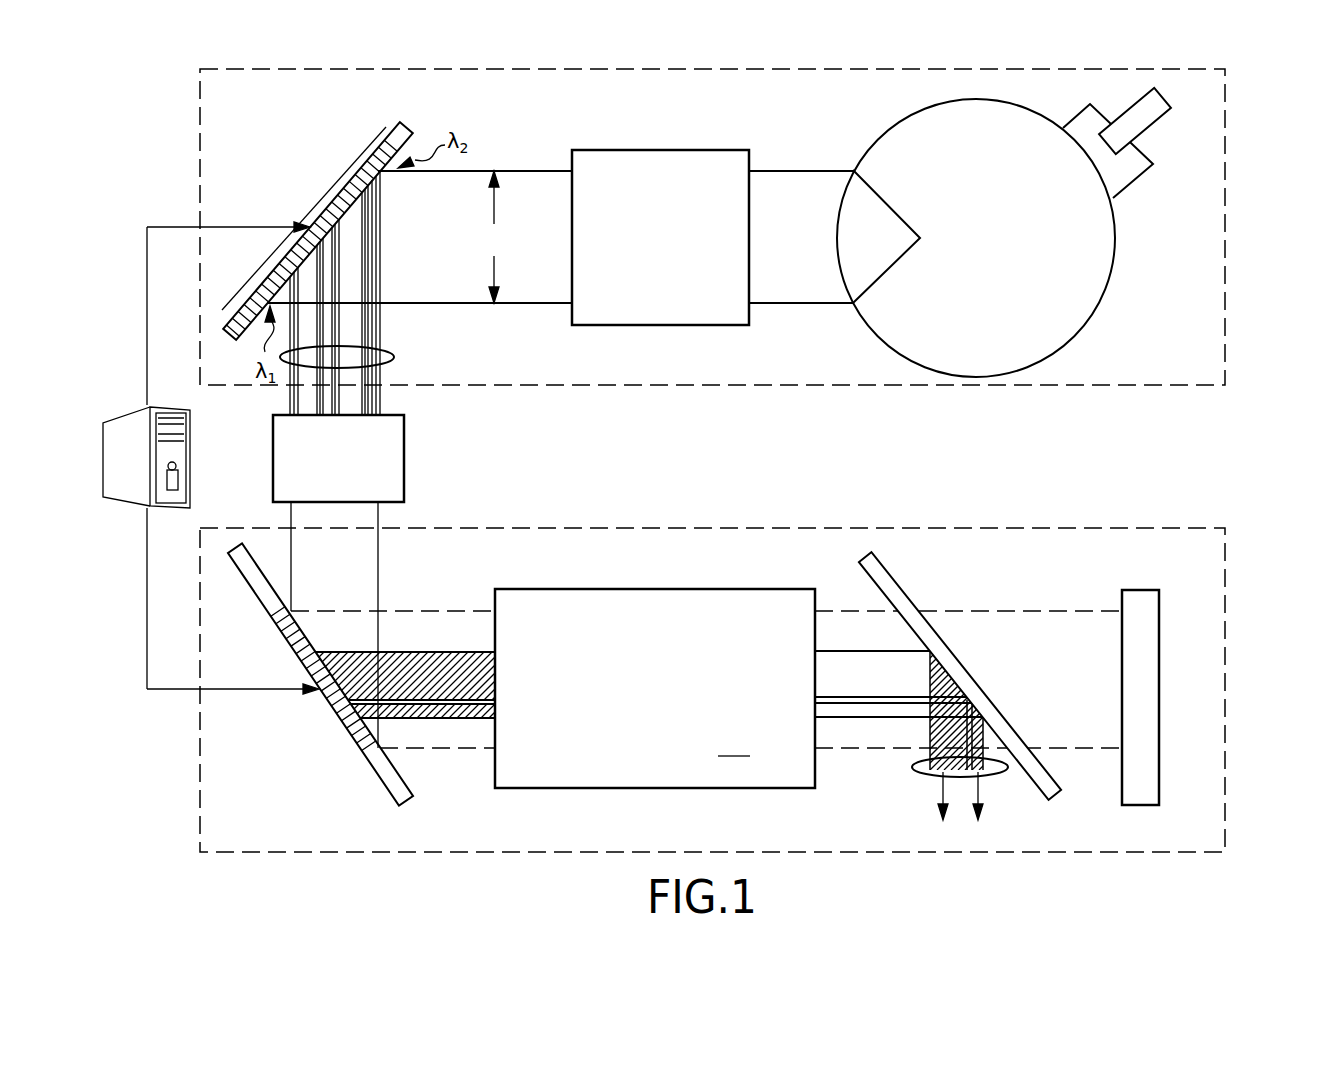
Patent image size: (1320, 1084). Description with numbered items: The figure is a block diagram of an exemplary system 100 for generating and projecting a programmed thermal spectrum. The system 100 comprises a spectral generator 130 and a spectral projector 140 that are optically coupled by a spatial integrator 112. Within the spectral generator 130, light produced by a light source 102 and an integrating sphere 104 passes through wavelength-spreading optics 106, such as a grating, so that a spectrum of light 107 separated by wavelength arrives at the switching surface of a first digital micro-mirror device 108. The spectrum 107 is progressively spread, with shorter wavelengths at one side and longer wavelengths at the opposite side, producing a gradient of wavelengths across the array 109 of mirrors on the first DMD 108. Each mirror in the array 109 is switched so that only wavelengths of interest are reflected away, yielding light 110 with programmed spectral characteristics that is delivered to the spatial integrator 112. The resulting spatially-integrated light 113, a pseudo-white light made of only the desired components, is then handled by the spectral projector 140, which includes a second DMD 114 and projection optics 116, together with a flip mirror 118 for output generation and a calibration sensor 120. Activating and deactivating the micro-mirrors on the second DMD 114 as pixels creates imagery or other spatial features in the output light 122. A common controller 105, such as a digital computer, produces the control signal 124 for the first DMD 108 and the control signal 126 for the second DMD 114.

The system 100 is at (1260, 148).
The light source 102 is at (1160, 118).
The integrating sphere 104 is at (1022, 332).
The controller 105 is at (167, 452).
The wavelength-spreading optics 106 is at (660, 325).
The spectrum of light 107 is at (517, 195).
The first digital micro-mirror device 108 is at (412, 130).
The array of mirrors 109 is at (320, 200).
The light 110 is at (393, 357).
The spatial integrator 112 is at (404, 462).
The spatially-integrated light 113 is at (378, 520).
The second digital micro-mirror device 114 is at (413, 800).
The projection optics 116 is at (655, 688).
The flip mirror 118 is at (963, 678).
The calibration sensor 120 is at (1145, 676).
The output light 122 is at (912, 765).
The control signal 124 is at (215, 227).
The control signal 126 is at (215, 690).
The spectral generator 130 is at (1022, 385).
The spectral projector 140 is at (1075, 528).